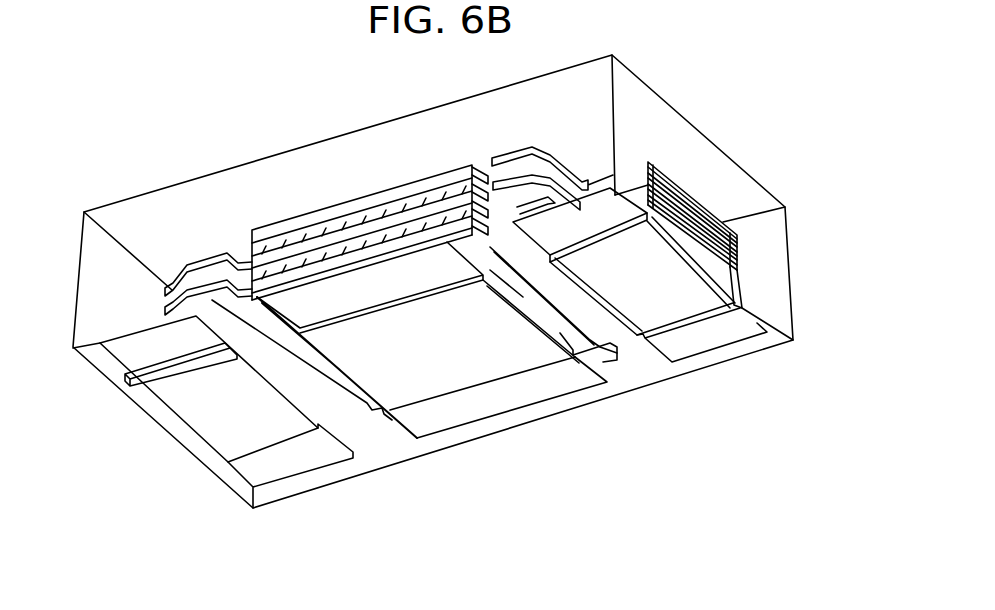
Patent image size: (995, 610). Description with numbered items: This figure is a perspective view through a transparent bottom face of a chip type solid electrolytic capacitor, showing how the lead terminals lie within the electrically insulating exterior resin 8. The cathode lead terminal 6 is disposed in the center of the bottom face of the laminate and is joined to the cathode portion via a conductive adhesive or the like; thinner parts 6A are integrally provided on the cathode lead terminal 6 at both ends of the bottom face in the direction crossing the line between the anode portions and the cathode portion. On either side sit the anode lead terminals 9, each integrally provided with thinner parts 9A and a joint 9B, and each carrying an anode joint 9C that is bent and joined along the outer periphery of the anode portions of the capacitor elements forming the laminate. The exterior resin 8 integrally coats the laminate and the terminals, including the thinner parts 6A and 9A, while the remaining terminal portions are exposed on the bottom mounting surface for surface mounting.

The exterior resin 8 is at (700, 152).
The anode joint 9C is at (633, 180).
The joint 9B is at (743, 282).
The anode lead terminal 9 is at (683, 288).
The thinner parts 9A is at (692, 335).
The cathode lead terminal 6 is at (458, 372).
The thinner parts 6A is at (537, 385).